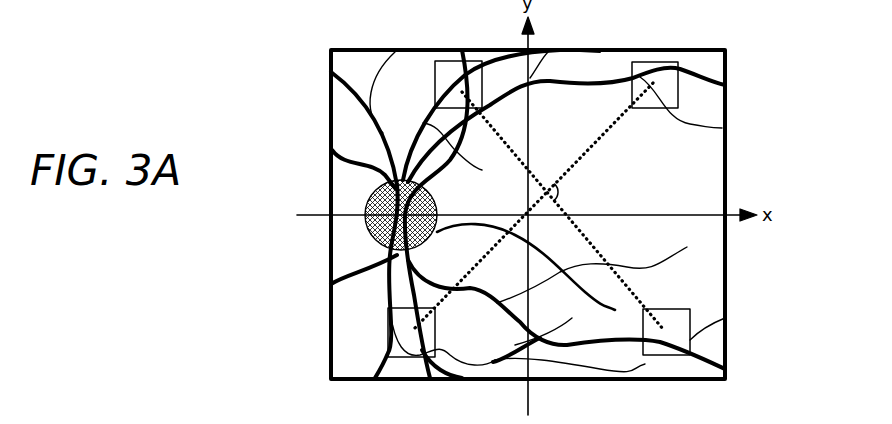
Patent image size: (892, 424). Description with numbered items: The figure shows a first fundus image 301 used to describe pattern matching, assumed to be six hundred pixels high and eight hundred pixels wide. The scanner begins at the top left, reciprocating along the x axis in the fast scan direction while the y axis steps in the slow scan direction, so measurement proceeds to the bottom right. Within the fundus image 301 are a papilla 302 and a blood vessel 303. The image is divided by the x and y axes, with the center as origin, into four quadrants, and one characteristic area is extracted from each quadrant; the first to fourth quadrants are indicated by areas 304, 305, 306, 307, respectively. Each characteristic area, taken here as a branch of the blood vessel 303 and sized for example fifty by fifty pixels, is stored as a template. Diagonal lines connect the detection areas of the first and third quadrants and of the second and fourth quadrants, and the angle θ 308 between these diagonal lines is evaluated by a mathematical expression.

The fundus image 301 is at (725, 164).
The papilla 302 is at (366, 204).
The blood vessel 303 is at (383, 133).
The first quadrant area 304 is at (678, 100).
The second quadrant area 305 is at (435, 68).
The third quadrant area 306 is at (388, 329).
The fourth quadrant area 307 is at (690, 317).
The angle θ 308 is at (582, 195).